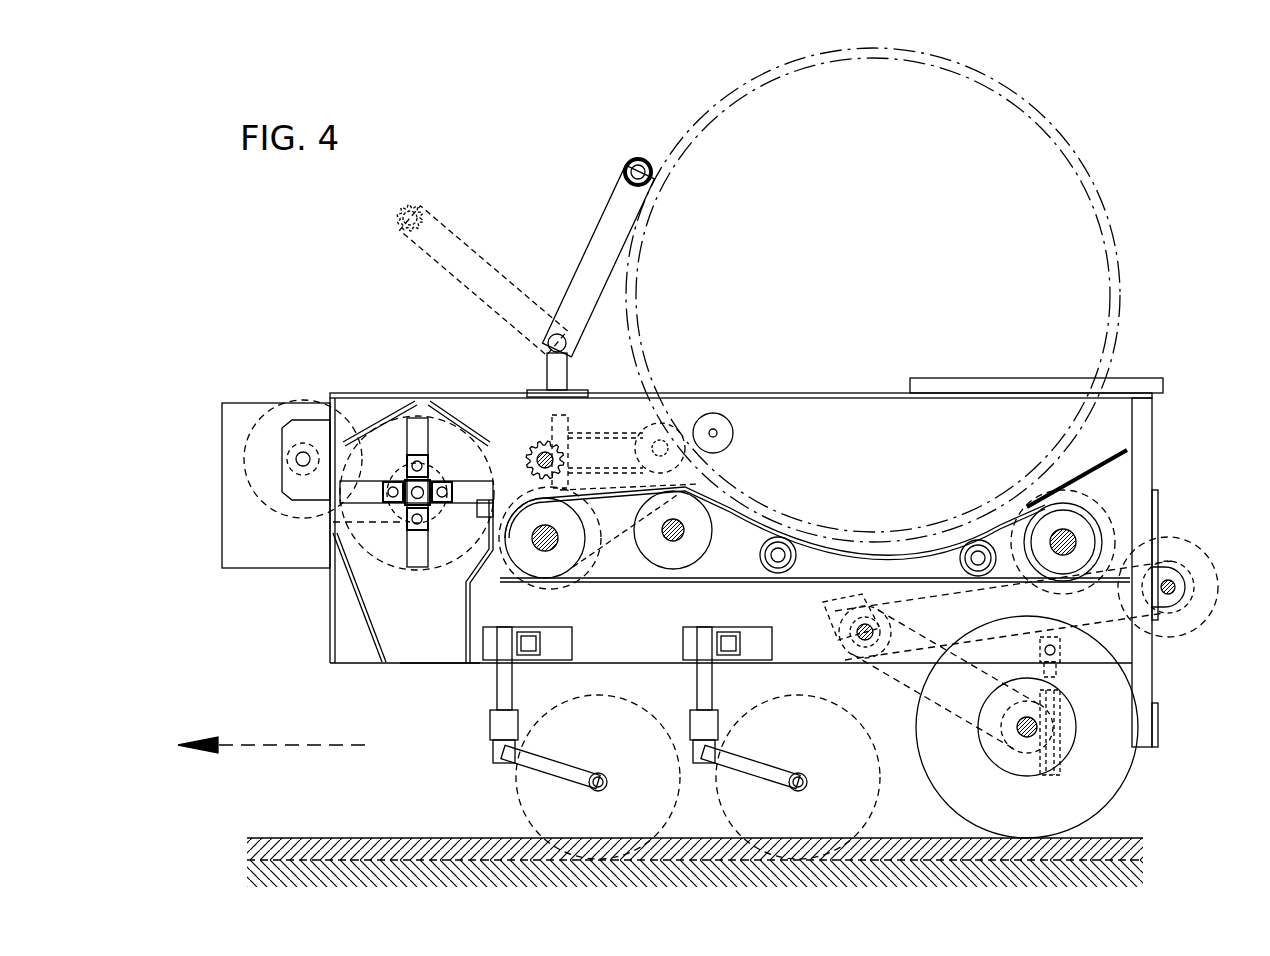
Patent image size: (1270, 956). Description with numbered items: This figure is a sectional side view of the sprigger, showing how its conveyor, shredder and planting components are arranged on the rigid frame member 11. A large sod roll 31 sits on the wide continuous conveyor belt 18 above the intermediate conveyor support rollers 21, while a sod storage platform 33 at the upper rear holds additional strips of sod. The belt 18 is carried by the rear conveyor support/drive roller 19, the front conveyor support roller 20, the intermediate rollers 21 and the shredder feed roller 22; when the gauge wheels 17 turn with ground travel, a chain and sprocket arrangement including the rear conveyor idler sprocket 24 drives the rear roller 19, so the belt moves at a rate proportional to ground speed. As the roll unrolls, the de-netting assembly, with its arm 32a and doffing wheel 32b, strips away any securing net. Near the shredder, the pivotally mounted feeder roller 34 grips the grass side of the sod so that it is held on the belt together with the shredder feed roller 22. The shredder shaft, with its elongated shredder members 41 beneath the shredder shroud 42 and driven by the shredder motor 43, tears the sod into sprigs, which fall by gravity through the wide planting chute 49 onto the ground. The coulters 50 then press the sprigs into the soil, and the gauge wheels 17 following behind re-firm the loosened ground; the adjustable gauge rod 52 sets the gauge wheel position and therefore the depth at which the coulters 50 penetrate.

The rigid frame member 11 is at (318, 637).
The gauge wheels 17 is at (1100, 798).
The conveyor belt 18 is at (619, 595).
The rear conveyor support/drive roller 19 is at (1080, 520).
The front conveyor support roller 20 is at (660, 555).
The intermediate conveyor support rollers 21 is at (779, 547).
The shredder feed roller 22 is at (545, 565).
The rear conveyor idler sprocket 24 is at (1210, 590).
The sod roll 31 is at (1100, 218).
The de-netting assembly arm 32a is at (585, 258).
The doffing wheel 32b is at (637, 158).
The sod storage platform 33 is at (1012, 378).
The feeder roller 34 is at (540, 452).
The shredder members 41 is at (466, 490).
The shredder shroud 42 is at (383, 425).
The shredder motor 43 is at (272, 440).
The planting chute 49 is at (450, 655).
The coulters 50 is at (525, 822).
The gauge rod 52 is at (1060, 693).